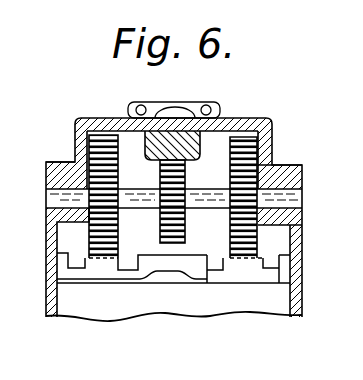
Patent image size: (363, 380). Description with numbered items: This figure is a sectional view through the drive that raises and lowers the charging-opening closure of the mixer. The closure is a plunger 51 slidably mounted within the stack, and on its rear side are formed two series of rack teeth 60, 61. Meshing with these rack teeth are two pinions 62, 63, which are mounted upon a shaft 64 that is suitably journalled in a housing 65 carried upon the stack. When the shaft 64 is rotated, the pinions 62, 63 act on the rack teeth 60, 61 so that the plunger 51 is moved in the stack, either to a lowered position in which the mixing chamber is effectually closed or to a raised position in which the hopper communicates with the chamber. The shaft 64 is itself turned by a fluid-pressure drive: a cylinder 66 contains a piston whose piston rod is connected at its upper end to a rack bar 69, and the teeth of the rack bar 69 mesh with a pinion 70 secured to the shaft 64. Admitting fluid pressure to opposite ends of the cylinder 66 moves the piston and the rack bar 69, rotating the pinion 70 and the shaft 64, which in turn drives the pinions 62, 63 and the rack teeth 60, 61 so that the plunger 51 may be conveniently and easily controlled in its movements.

The plunger 51 is at (160, 313).
The rack teeth 60 is at (257, 260).
The rack teeth 61 is at (112, 258).
The pinion 62 is at (250, 142).
The pinion 63 is at (100, 140).
The shaft 64 is at (147, 200).
The housing 65 is at (294, 180).
The cylinder 66 is at (183, 110).
The rack bar 69 is at (165, 138).
The pinion 70 is at (175, 235).